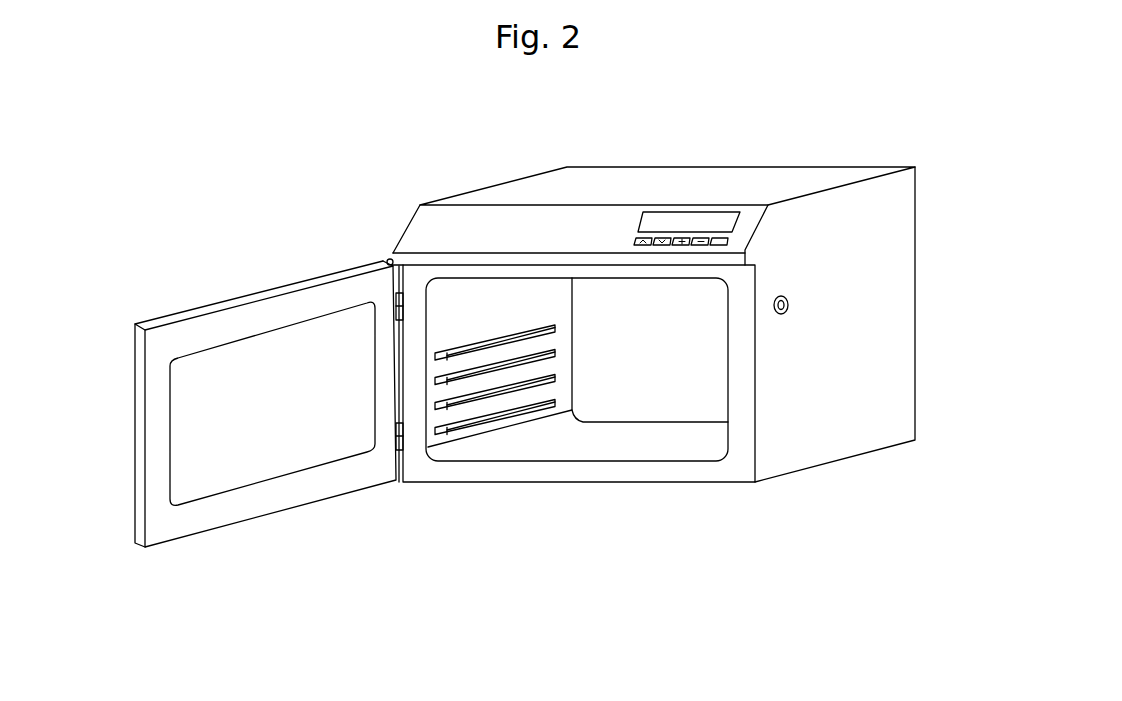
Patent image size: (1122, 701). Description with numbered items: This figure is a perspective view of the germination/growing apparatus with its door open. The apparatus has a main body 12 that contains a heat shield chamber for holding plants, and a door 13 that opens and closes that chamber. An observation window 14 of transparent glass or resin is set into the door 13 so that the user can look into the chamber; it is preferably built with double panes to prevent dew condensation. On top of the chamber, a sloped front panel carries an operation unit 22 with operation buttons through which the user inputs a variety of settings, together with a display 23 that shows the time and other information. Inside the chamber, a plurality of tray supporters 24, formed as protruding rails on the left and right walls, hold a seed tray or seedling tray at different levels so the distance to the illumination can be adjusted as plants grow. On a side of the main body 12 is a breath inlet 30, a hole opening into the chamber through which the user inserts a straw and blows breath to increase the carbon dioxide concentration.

The main body 12 is at (890, 308).
The door 13 is at (170, 330).
The observation window 14 is at (277, 462).
The operation unit 22 is at (637, 237).
The display 23 is at (687, 205).
The tray supporter 24 is at (463, 343).
The breath inlet 30 is at (785, 294).